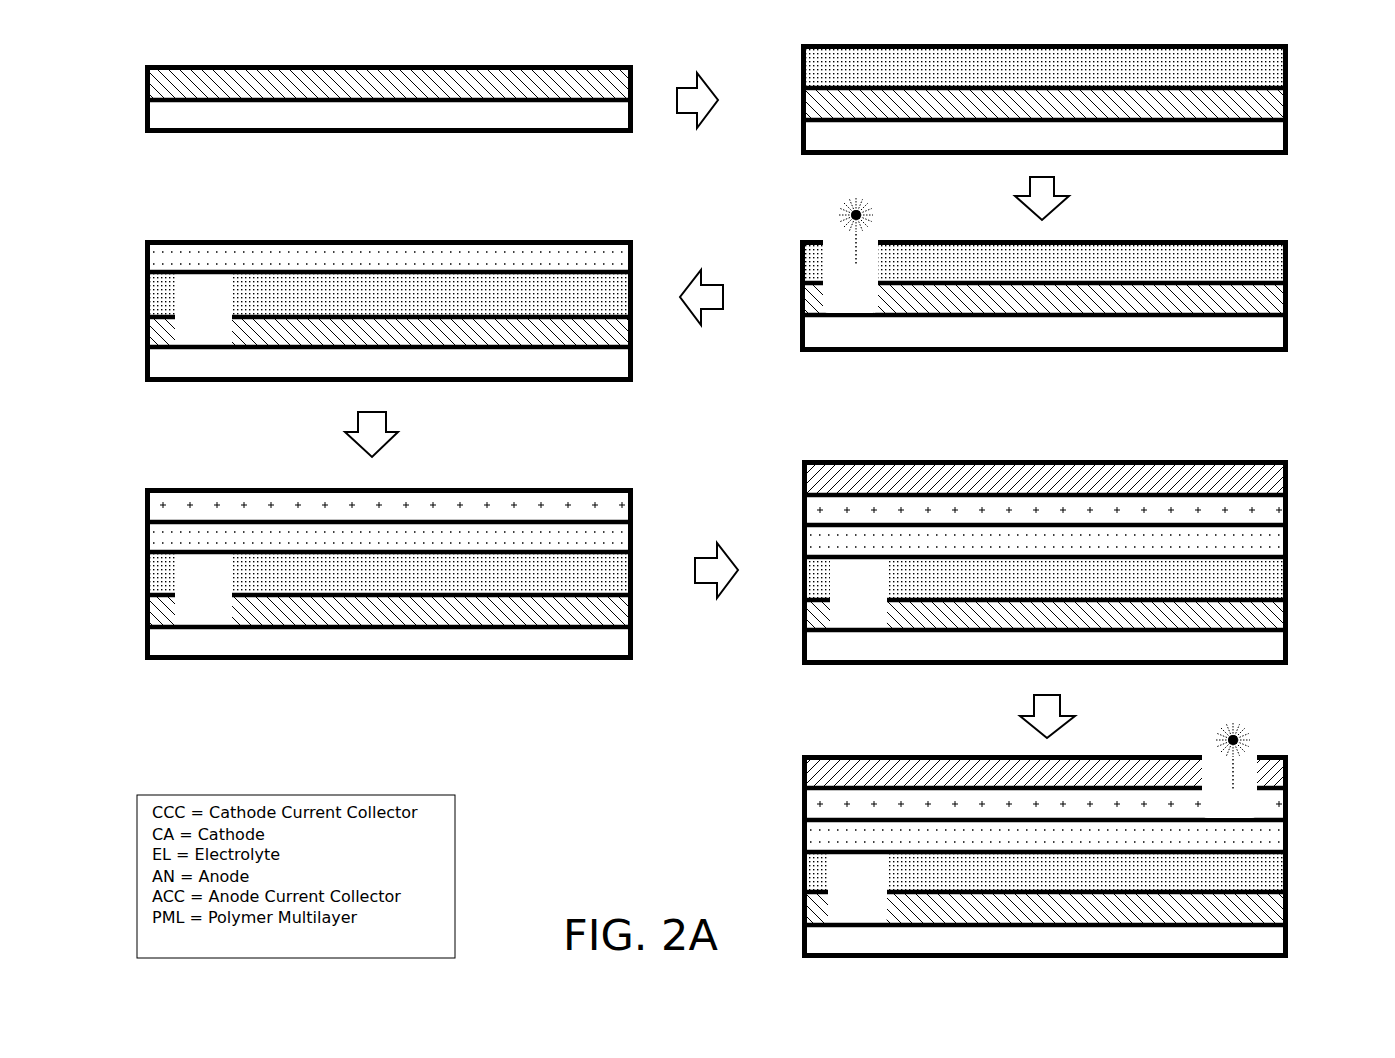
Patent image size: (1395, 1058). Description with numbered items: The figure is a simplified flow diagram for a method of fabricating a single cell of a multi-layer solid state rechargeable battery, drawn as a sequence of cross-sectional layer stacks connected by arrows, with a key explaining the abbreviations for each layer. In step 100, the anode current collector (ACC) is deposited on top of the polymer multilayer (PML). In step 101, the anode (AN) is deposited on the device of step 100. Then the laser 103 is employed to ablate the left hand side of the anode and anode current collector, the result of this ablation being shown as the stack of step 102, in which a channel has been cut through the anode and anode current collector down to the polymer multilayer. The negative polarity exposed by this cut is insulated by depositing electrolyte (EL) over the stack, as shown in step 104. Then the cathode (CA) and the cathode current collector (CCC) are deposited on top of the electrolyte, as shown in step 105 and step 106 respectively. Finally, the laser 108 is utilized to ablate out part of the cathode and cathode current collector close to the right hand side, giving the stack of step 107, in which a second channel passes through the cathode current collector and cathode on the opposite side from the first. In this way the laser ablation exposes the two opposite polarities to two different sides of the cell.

The step of depositing anode current collector 100 is at (137, 103).
The step of depositing anode 101 is at (1295, 105).
The laser ablation step 102 is at (1300, 300).
The laser 103 is at (820, 200).
The step of depositing electrolyte 104 is at (137, 292).
The step of depositing cathode 105 is at (137, 560).
The step of depositing cathode current collector 106 is at (1297, 580).
The laser ablation step for cathode side 107 is at (1300, 858).
The laser 108 is at (1212, 722).